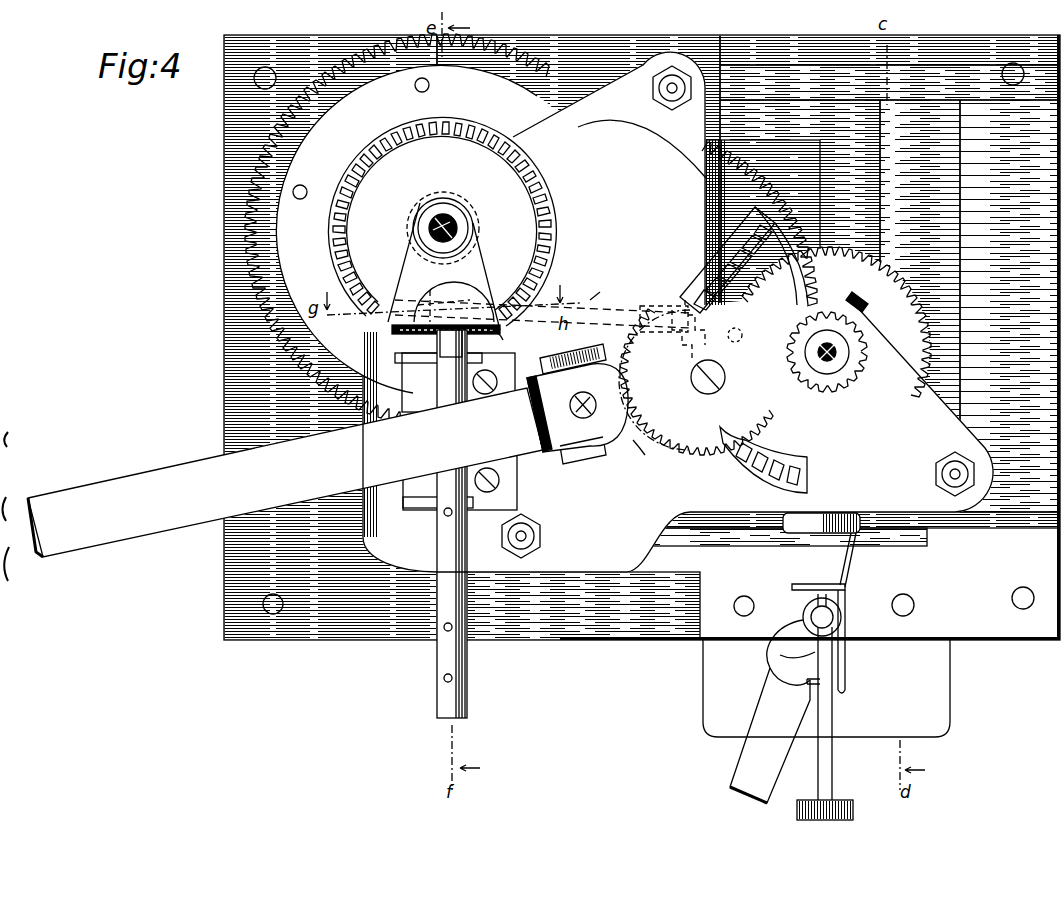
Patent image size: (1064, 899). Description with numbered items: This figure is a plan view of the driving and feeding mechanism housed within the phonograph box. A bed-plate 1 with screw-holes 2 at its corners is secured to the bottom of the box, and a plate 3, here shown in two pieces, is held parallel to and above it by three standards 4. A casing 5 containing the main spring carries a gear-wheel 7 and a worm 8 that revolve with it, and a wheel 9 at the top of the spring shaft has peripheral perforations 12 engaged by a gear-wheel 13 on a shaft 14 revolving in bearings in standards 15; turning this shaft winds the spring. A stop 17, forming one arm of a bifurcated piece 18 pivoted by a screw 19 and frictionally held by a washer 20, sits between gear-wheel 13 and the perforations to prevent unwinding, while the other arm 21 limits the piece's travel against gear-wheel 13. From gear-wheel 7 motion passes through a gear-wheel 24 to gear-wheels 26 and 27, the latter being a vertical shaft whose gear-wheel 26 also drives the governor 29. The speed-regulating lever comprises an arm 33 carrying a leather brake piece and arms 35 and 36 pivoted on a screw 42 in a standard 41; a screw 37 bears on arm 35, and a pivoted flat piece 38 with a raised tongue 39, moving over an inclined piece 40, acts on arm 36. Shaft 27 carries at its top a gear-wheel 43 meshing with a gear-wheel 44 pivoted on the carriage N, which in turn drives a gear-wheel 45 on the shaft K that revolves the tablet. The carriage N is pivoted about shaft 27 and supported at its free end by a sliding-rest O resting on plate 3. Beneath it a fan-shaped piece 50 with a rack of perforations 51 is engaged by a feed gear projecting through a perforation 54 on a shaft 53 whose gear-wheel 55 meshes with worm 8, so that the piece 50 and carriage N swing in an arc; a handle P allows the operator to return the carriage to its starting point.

The bed-plate 1 is at (362, 642).
The screw-holes 2 is at (1020, 80).
The plate 3 is at (710, 84).
The standards 4 is at (678, 96).
The casing 5 is at (297, 160).
The gear-wheel 7 is at (263, 245).
The worm 8 is at (418, 201).
The wheel 9 is at (377, 178).
The perforations 12 is at (381, 150).
The gear-wheel 13 is at (500, 330).
The shaft 14 is at (466, 660).
The standards 15 is at (430, 360).
The stop 17 is at (390, 324).
The bifurcated piece 18 is at (478, 264).
The screw 19 is at (441, 215).
The washer 20 is at (455, 208).
The arm 21 is at (488, 284).
The gear-wheel 24 is at (790, 196).
The gear-wheel 26 is at (893, 278).
The vertical shaft 27 is at (835, 372).
The governor 29 is at (808, 534).
The arm 33 is at (853, 548).
The arm 35 is at (822, 585).
The arm 36 is at (848, 642).
The screw 37 is at (820, 773).
The flat piece of metal 38 is at (740, 768).
The raised tongue 39 is at (825, 684).
The inclined piece of metal 40 is at (703, 712).
The standard 41 is at (791, 652).
The screw 42 is at (846, 612).
The gear-wheel 43 is at (858, 370).
The gear-wheel 44 is at (688, 456).
The gear-wheel 45 is at (598, 462).
The fan-shaped piece 50 is at (697, 282).
The perforations 51 is at (704, 262).
The shaft 53 is at (601, 287).
The perforation 54 is at (690, 310).
The gear-wheel 55 is at (542, 305).
The handle P is at (168, 522).
The shaft K is at (577, 408).
The sliding-rest O is at (580, 462).
The carriage N is at (635, 443).